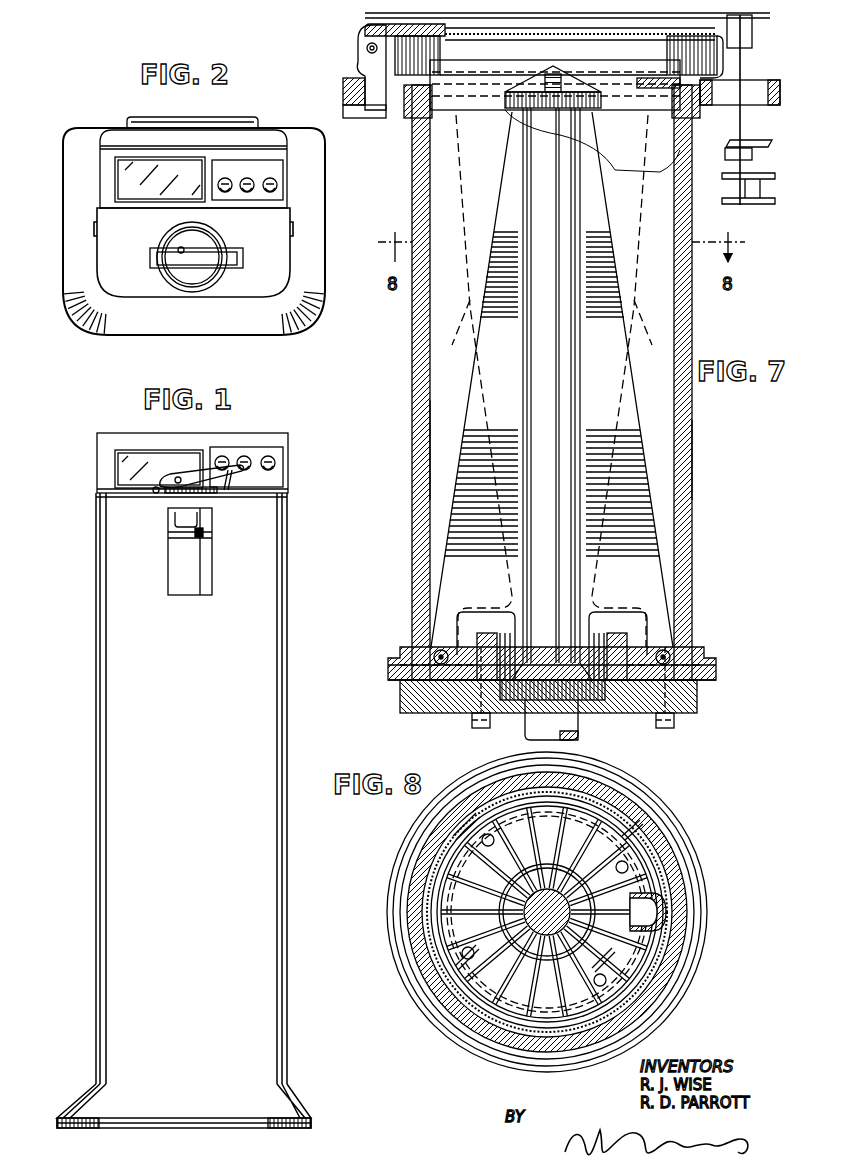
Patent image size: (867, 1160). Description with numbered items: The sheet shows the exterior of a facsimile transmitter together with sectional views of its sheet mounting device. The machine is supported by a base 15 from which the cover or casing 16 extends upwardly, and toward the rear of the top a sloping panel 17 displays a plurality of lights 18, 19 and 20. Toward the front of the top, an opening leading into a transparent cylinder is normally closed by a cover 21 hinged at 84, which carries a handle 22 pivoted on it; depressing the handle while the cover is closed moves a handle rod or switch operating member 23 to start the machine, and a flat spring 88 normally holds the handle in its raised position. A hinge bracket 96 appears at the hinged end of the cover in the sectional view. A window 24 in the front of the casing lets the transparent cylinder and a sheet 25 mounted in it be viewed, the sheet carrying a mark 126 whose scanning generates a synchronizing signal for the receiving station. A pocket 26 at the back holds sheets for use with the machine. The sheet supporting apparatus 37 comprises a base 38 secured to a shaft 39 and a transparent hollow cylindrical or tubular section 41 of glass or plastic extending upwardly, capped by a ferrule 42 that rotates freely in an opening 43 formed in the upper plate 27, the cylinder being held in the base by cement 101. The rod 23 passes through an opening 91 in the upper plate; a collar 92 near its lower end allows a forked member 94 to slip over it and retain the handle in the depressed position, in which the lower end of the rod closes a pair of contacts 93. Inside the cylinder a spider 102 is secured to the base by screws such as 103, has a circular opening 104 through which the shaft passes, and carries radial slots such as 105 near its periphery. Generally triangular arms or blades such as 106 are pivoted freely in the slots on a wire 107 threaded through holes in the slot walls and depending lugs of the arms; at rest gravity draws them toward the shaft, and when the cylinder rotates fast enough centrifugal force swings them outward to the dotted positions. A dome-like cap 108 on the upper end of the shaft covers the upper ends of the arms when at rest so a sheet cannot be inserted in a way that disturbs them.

In FIG. 2, the base 15 is at (75, 310).
In FIG. 1, the base 15 is at (82, 1102).
In FIG. 2, the cover or casing 16 is at (100, 252).
In FIG. 1, the cover or casing 16 is at (102, 698).
In FIG. 2, the sloping panel 17 is at (108, 172).
In FIG. 1, the sloping panel 17 is at (112, 462).
In FIG. 2, the light 18 is at (280, 188).
In FIG. 1, the light 18 is at (268, 455).
In FIG. 2, the light 19 is at (248, 193).
In FIG. 1, the light 19 is at (244, 455).
In FIG. 2, the light 20 is at (226, 193).
In FIG. 1, the light 20 is at (222, 455).
In FIG. 2, the cover 21 is at (220, 274).
In FIG. 1, the cover 21 is at (172, 496).
In FIG. 7, the cover 21 is at (652, 42).
In FIG. 2, the handle 22 is at (235, 250).
In FIG. 1, the handle 22 is at (176, 470).
In FIG. 7, the handle 22 is at (378, 20).
In FIG. 1, the handle rod or switch operating member 23 is at (226, 492).
In FIG. 7, the handle rod or switch operating member 23 is at (742, 58).
In FIG. 1, the window 24 is at (170, 570).
In FIG. 1, the sheet 25 is at (192, 573).
In FIG. 7, the sheet 25 is at (418, 172).
In FIG. 8, the sheet 25 is at (428, 877).
In FIG. 2, the pocket 26 is at (238, 120).
In FIG. 7, the upper plate 27 is at (343, 91).
In FIG. 7, the apparatus 37 is at (690, 462).
In FIG. 7, the base 38 is at (708, 668).
In FIG. 8, the base 38 is at (700, 920).
In FIG. 7, the shaft 39 is at (524, 726).
In FIG. 8, the shaft 39 is at (552, 895).
In FIG. 7, the transparent hollow cylindrical or tubular section 41 is at (688, 540).
In FIG. 8, the transparent hollow cylindrical or tubular section 41 is at (662, 818).
In FIG. 7, the ferrule 42 is at (412, 120).
In FIG. 7, the opening 43 is at (700, 118).
In FIG. 7, the hinge 84 is at (366, 52).
In FIG. 7, the flat spring 88 is at (476, 41).
In FIG. 7, the opening 91 is at (756, 92).
In FIG. 7, the collar 92 is at (730, 156).
In FIG. 7, the pair of contacts 93 is at (742, 188).
In FIG. 7, the forked member 94 is at (752, 141).
In FIG. 7, the hinge bracket 96 is at (357, 45).
In FIG. 7, the cement 101 is at (690, 647).
In FIG. 8, the cement 101 is at (690, 850).
In FIG. 7, the spider 102 is at (620, 714).
In FIG. 8, the spider 102 is at (436, 930).
In FIG. 7, the screws 103 is at (665, 724).
In FIG. 8, the screws 103 is at (470, 830).
In FIG. 7, the circular opening 104 is at (582, 708).
In FIG. 8, the circular opening 104 is at (520, 937).
In FIG. 7, the radial slots 105 is at (432, 712).
In FIG. 7, the arms or blades 106 is at (478, 377).
In FIG. 8, the arms or blades 106 is at (484, 934).
In FIG. 7, the wire 107 is at (441, 648).
In FIG. 8, the wire 107 is at (668, 895).
In FIG. 7, the dome-like cap 108 is at (556, 70).
In FIG. 1, the mark 126 is at (204, 534).